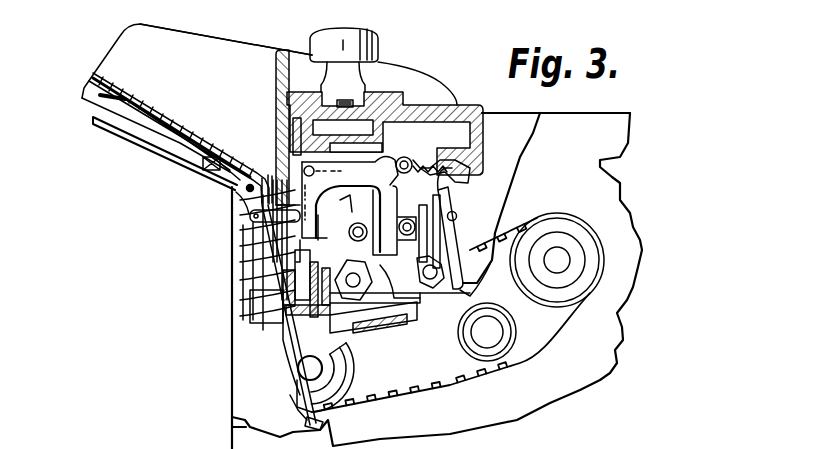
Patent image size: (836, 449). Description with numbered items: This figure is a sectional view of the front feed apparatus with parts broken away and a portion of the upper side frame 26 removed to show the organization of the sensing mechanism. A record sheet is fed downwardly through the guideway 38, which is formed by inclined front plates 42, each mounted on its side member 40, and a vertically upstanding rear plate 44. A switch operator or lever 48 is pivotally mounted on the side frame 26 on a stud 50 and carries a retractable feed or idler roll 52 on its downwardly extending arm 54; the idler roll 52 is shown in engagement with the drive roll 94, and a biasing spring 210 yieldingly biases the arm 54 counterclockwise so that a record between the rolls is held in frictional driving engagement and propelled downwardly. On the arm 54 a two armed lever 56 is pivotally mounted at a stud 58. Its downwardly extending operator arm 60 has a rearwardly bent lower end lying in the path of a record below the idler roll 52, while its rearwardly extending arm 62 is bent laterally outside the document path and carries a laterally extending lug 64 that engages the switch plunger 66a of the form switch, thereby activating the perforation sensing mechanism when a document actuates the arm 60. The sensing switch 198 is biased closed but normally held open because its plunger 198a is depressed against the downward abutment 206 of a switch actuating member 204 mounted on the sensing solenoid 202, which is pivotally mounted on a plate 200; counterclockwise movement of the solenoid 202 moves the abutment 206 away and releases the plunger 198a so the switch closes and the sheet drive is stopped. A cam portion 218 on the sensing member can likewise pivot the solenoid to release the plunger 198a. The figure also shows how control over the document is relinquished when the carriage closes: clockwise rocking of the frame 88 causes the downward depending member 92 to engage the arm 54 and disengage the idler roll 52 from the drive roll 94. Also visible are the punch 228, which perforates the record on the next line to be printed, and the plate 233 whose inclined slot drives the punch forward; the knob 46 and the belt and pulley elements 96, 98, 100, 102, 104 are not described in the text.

The upper side frame 26 is at (546, 110).
The guideway 38 is at (226, 28).
The side member 40 is at (121, 42).
The inclined front plate 42 is at (92, 76).
The rear plate 44 is at (282, 44).
The knob 46 is at (372, 48).
The switch operator or lever 48 is at (114, 138).
The stud 50 is at (240, 187).
The retractable feed or idler roll 52 is at (292, 402).
The downwardly extending arm 54 is at (268, 335).
The two armed lever 56 is at (243, 192).
The stud 58 is at (250, 215).
The downwardly extending operator or arm 60 is at (282, 352).
The rearwardly extending arm 62 is at (268, 178).
The laterally extending lug 64 is at (278, 274).
The switch plunger 66a is at (275, 255).
The frame 88 is at (466, 99).
The downward depending member 92 is at (280, 308).
The drive roll 94 is at (322, 366).
The toothed belt 96 is at (463, 392).
The sector 98 is at (350, 378).
The small pulley 100 is at (470, 322).
The large pulley 102 is at (583, 288).
The pulley shaft 104 is at (561, 262).
The sensing switch 198 is at (463, 250).
The plunger 198a is at (456, 212).
The plate 200 is at (471, 292).
The sensing solenoid 202 is at (366, 220).
The switch actuating member 204 is at (444, 193).
The abutment 206 is at (374, 197).
The biasing spring 210 is at (140, 113).
The cam portion 218 is at (280, 230).
The punch 228 is at (292, 372).
The plate 233 is at (400, 323).